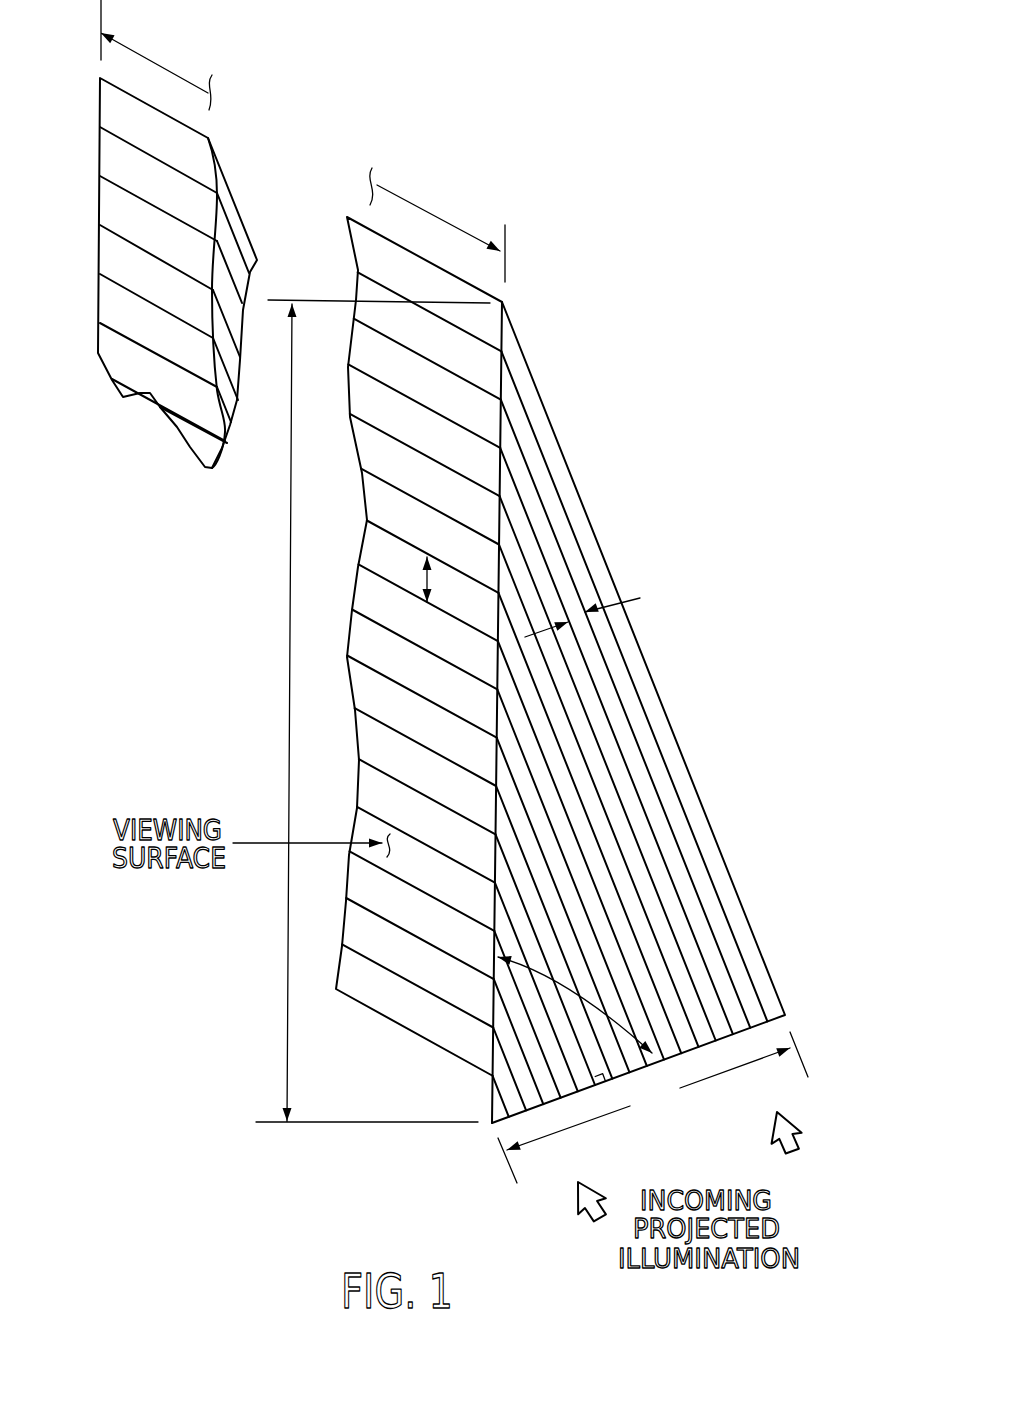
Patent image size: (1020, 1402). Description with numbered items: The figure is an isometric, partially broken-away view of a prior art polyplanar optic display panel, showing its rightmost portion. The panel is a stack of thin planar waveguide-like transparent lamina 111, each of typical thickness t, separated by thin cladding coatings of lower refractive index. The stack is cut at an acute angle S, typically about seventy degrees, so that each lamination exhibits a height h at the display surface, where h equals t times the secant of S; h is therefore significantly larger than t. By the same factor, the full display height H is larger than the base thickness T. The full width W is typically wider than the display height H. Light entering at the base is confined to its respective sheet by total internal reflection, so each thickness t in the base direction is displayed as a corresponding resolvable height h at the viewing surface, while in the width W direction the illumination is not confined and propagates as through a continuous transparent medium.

The transparent lamina 111 is at (570, 500).
The full width W is at (441, 222).
The full display height H is at (288, 597).
The lamination height at display surface h is at (432, 576).
The lamination thickness t is at (590, 609).
The acute cut angle S is at (580, 990).
The base thickness T is at (653, 1107).